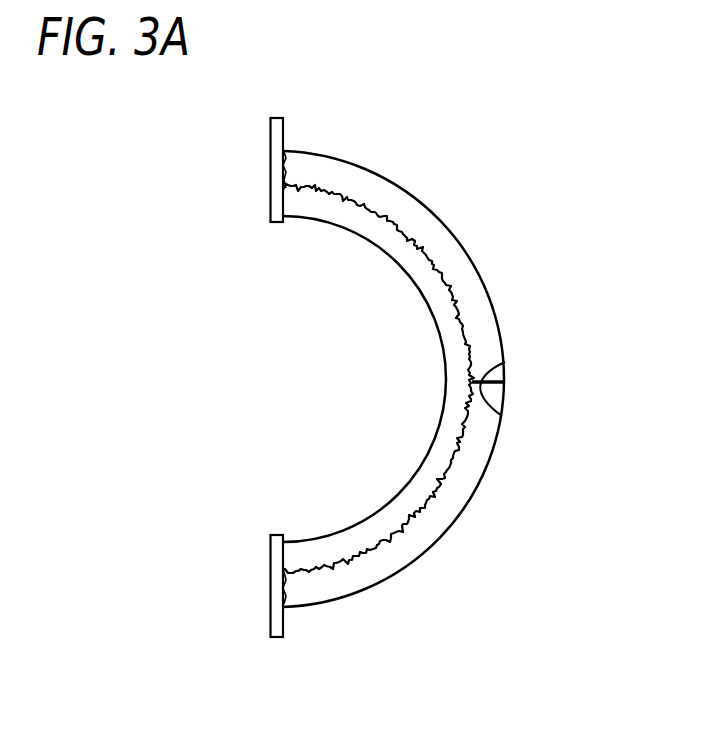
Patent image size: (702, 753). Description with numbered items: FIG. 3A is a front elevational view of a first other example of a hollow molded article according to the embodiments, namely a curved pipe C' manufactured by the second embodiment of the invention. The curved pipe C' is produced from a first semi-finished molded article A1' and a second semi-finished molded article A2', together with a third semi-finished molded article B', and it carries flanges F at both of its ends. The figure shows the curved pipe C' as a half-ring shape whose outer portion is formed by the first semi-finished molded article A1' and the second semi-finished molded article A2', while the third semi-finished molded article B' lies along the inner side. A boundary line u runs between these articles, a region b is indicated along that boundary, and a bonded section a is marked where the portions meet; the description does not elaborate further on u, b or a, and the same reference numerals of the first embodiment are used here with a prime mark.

The flange F is at (283, 128).
The uneven interface line u is at (428, 250).
The first semi-finished molded article A1' is at (432, 265).
The second semi-finished molded article A2' is at (393, 493).
The third semi-finished molded article B' is at (364, 379).
The boundary b is at (435, 262).
The bonded section a is at (505, 364).
The curved pipe C' is at (272, 378).